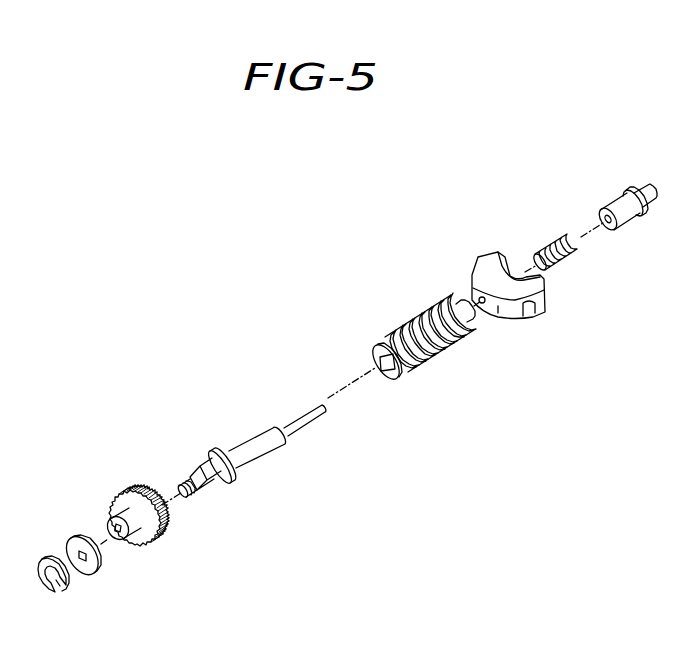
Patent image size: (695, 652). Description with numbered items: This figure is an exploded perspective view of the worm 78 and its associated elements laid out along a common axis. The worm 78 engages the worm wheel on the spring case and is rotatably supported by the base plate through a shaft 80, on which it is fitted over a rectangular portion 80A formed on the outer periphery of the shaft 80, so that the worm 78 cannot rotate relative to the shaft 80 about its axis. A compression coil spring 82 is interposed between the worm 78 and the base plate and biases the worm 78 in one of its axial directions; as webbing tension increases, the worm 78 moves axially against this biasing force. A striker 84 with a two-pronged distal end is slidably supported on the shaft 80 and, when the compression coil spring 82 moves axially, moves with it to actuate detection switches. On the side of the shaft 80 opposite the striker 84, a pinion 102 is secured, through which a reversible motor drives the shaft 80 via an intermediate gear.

The worm 78 is at (433, 355).
The shaft 80 is at (298, 413).
The rectangular portion 80A is at (243, 445).
The compression coil spring 82 is at (565, 260).
The striker 84 is at (515, 313).
The pinion 102 is at (133, 492).